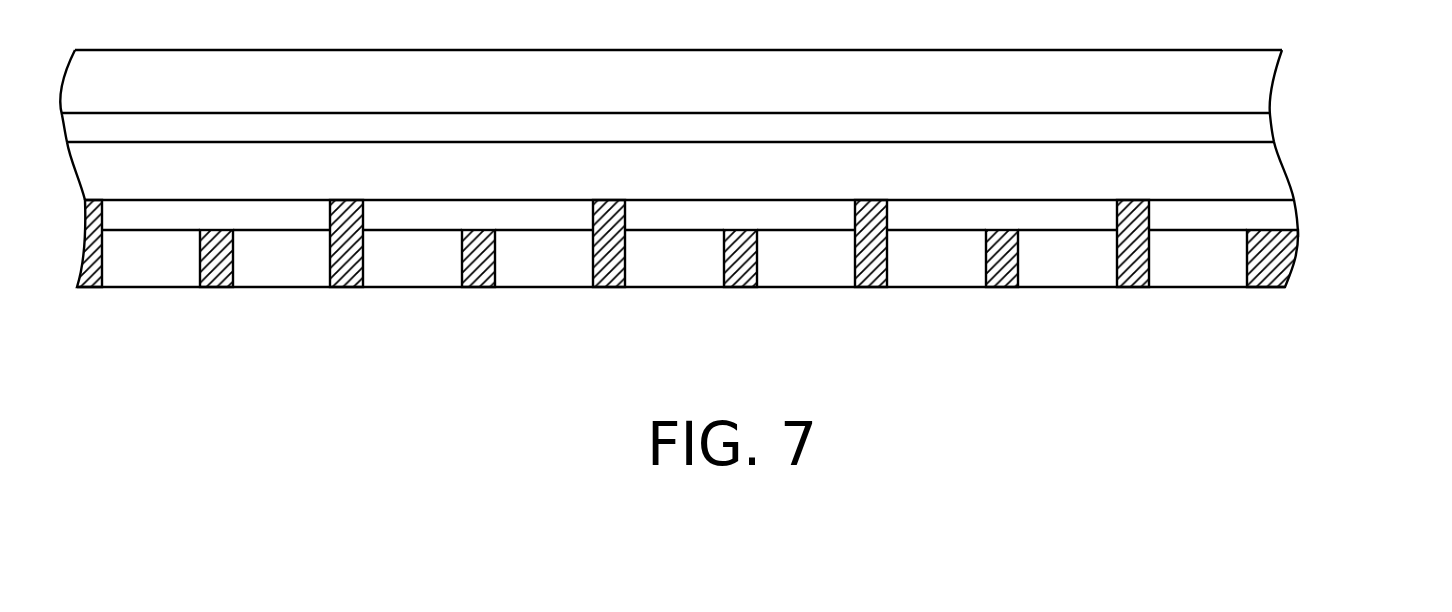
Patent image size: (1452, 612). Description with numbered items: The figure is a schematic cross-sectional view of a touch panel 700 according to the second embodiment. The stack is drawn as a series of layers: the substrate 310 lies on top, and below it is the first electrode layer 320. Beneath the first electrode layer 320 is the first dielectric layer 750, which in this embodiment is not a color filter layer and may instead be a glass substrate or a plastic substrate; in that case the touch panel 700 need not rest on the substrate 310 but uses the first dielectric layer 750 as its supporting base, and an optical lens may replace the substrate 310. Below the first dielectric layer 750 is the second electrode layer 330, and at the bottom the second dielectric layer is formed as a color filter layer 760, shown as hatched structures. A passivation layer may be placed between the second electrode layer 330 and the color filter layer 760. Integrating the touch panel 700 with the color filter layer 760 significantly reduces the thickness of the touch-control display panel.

The substrate 310 is at (1263, 87).
The first electrode layer 320 is at (1263, 133).
The first dielectric layer 750 is at (1270, 175).
The second electrode layer 330 is at (1270, 220).
The color filter layer 760 is at (1273, 246).
The touch panel 700 is at (1257, 353).